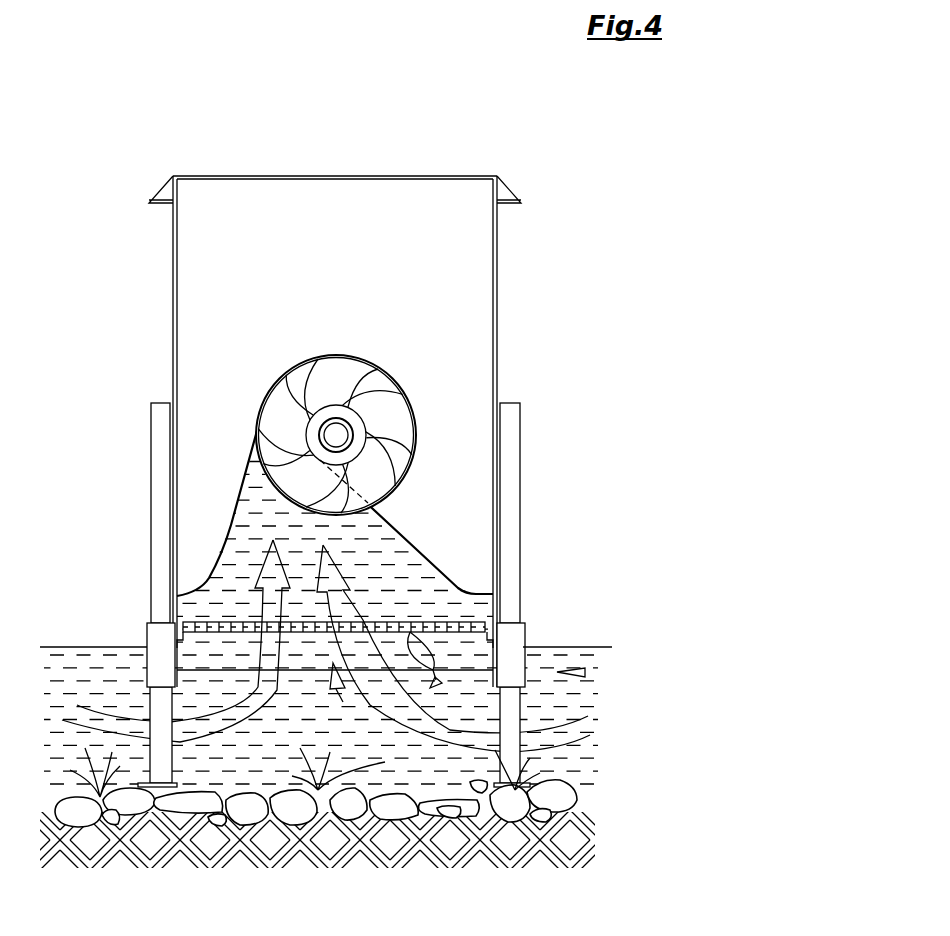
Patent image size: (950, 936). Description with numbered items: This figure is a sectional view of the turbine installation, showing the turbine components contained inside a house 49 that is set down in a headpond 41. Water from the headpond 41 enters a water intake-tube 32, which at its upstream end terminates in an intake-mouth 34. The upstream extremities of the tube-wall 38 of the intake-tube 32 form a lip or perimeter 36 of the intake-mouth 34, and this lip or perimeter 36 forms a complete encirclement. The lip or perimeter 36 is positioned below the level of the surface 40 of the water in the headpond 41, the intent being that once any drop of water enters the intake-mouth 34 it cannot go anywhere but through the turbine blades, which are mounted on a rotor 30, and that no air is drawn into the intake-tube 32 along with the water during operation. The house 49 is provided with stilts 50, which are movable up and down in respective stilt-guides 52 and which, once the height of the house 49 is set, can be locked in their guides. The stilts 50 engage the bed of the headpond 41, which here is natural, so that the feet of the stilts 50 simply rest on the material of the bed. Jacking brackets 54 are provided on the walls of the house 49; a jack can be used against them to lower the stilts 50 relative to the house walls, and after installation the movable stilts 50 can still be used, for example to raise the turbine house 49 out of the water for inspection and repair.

The rotor 30 is at (333, 432).
The water intake-tube 32 is at (228, 536).
The intake-mouth 34 is at (352, 707).
The lip or perimeter 36 is at (304, 672).
The tube-wall 38 is at (420, 547).
The surface 40 is at (110, 647).
The headpond 41 is at (585, 672).
The house 49 is at (280, 190).
The stilts 50 is at (507, 485).
The stilt-guides 52 is at (508, 638).
The jacking brackets 54 is at (507, 203).